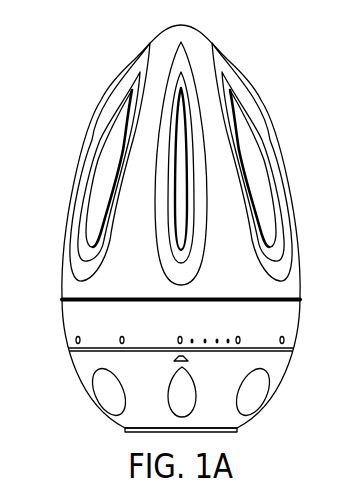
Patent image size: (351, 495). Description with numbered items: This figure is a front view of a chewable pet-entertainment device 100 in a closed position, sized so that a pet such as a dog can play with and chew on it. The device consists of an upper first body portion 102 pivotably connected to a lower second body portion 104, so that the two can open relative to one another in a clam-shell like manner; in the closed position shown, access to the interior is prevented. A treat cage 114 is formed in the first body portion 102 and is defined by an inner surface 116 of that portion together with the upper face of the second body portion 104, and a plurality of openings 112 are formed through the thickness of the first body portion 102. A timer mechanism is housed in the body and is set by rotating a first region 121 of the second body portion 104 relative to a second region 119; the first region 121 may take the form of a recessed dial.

The chewable pet-entertainment device 100 is at (286, 61).
The first body portion 102 is at (265, 110).
The second body portion 104 is at (68, 349).
The openings 112 is at (105, 178).
The treat cage 114 is at (268, 191).
The inner surface 116 is at (91, 254).
The second region 119 is at (290, 312).
The first region 121 is at (99, 409).